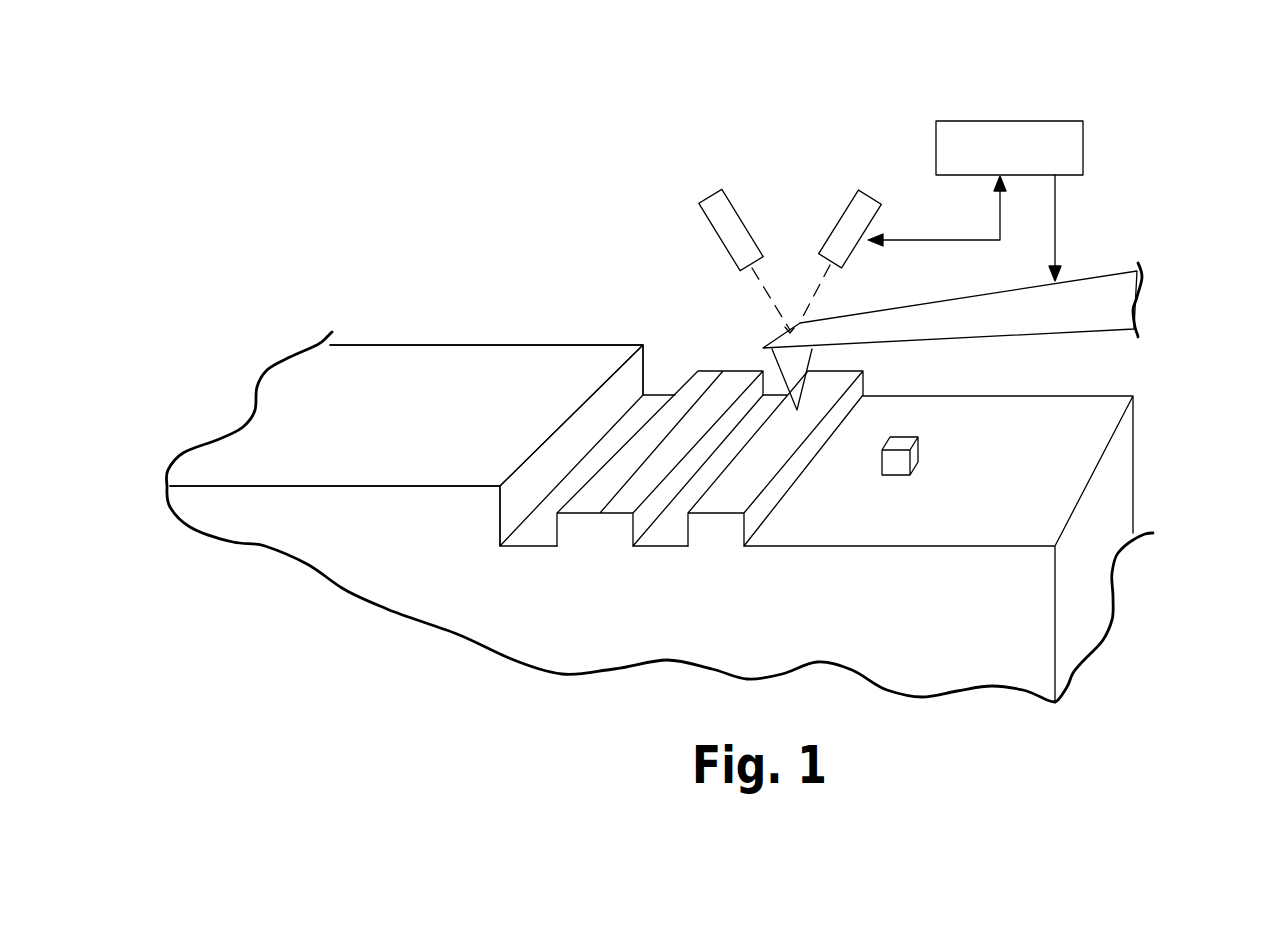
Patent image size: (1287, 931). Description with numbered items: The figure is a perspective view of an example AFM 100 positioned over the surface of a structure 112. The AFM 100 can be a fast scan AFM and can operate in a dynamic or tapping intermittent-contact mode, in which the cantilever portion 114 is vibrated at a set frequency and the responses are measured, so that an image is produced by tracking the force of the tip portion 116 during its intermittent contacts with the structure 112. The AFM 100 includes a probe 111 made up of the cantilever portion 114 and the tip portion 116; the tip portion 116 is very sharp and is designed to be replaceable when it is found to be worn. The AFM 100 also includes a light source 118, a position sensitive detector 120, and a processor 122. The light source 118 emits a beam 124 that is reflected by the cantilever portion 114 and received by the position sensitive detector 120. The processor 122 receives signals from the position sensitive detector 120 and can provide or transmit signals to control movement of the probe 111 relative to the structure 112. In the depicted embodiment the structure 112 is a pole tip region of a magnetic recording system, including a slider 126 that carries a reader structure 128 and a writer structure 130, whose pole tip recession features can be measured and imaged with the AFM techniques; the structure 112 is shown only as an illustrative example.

The AFM 100 is at (788, 108).
The probe 111 is at (1001, 306).
The structure 112 is at (1100, 591).
The cantilever portion 114 is at (1108, 288).
The tip portion 116 is at (803, 362).
The light source 118 is at (717, 200).
The position sensitive detector 120 is at (867, 200).
The processor 122 is at (1083, 143).
The beam 124 is at (760, 297).
The slider 126 is at (462, 360).
The reader structure 128 is at (702, 370).
The writer structure 130 is at (912, 453).